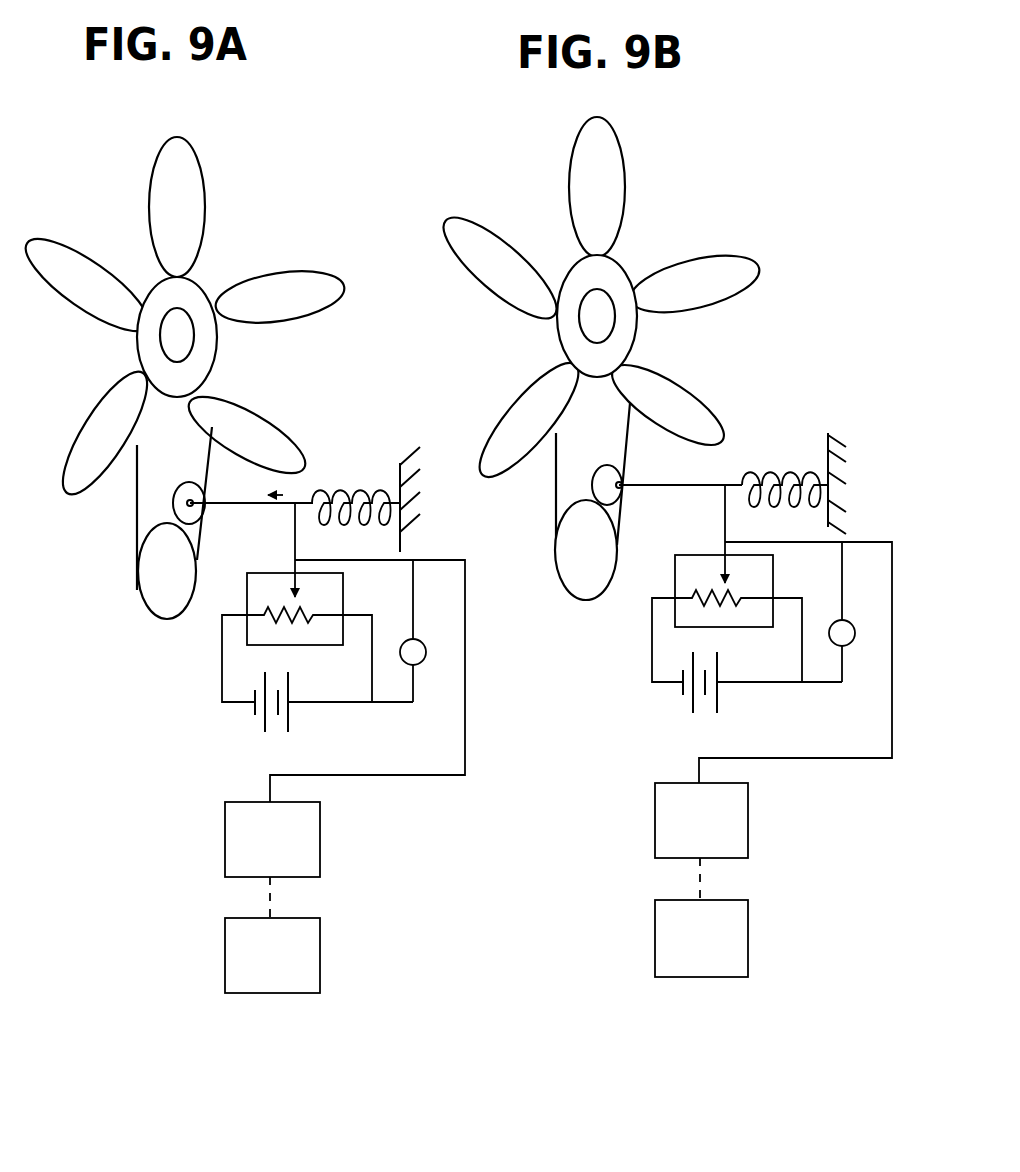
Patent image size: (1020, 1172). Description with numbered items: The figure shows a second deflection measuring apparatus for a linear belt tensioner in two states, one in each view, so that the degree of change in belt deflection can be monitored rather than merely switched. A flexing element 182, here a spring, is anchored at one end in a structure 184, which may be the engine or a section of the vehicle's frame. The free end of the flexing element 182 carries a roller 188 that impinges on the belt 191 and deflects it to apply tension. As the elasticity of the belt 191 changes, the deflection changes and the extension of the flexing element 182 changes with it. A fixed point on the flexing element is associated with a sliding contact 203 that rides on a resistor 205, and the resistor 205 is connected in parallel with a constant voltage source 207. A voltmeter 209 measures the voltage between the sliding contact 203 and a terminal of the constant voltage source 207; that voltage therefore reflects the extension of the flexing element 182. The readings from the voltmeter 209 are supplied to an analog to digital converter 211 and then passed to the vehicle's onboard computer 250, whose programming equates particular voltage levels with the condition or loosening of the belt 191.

In FIG. 9A, the flexing element 182 is at (337, 490).
In FIG. 9B, the flexing element 182 is at (795, 470).
In FIG. 9A, the structure 184 is at (412, 457).
In FIG. 9B, the structure 184 is at (840, 434).
In FIG. 9A, the roller 188 is at (198, 490).
In FIG. 9B, the roller 188 is at (620, 485).
In FIG. 9A, the belt 191 is at (200, 545).
In FIG. 9A, the sliding contact 203 is at (296, 543).
In FIG. 9B, the sliding contact 203 is at (725, 523).
In FIG. 9A, the resistor 205 is at (247, 576).
In FIG. 9B, the resistor 205 is at (675, 580).
In FIG. 9A, the constant voltage source 207 is at (290, 716).
In FIG. 9B, the constant voltage source 207 is at (718, 700).
In FIG. 9A, the voltmeter 209 is at (427, 648).
In FIG. 9B, the voltmeter 209 is at (848, 647).
In FIG. 9A, the analog to digital converter 211 is at (320, 842).
In FIG. 9B, the analog to digital converter 211 is at (748, 820).
In FIG. 9A, the onboard computer 250 is at (320, 955).
In FIG. 9B, the onboard computer 250 is at (748, 937).